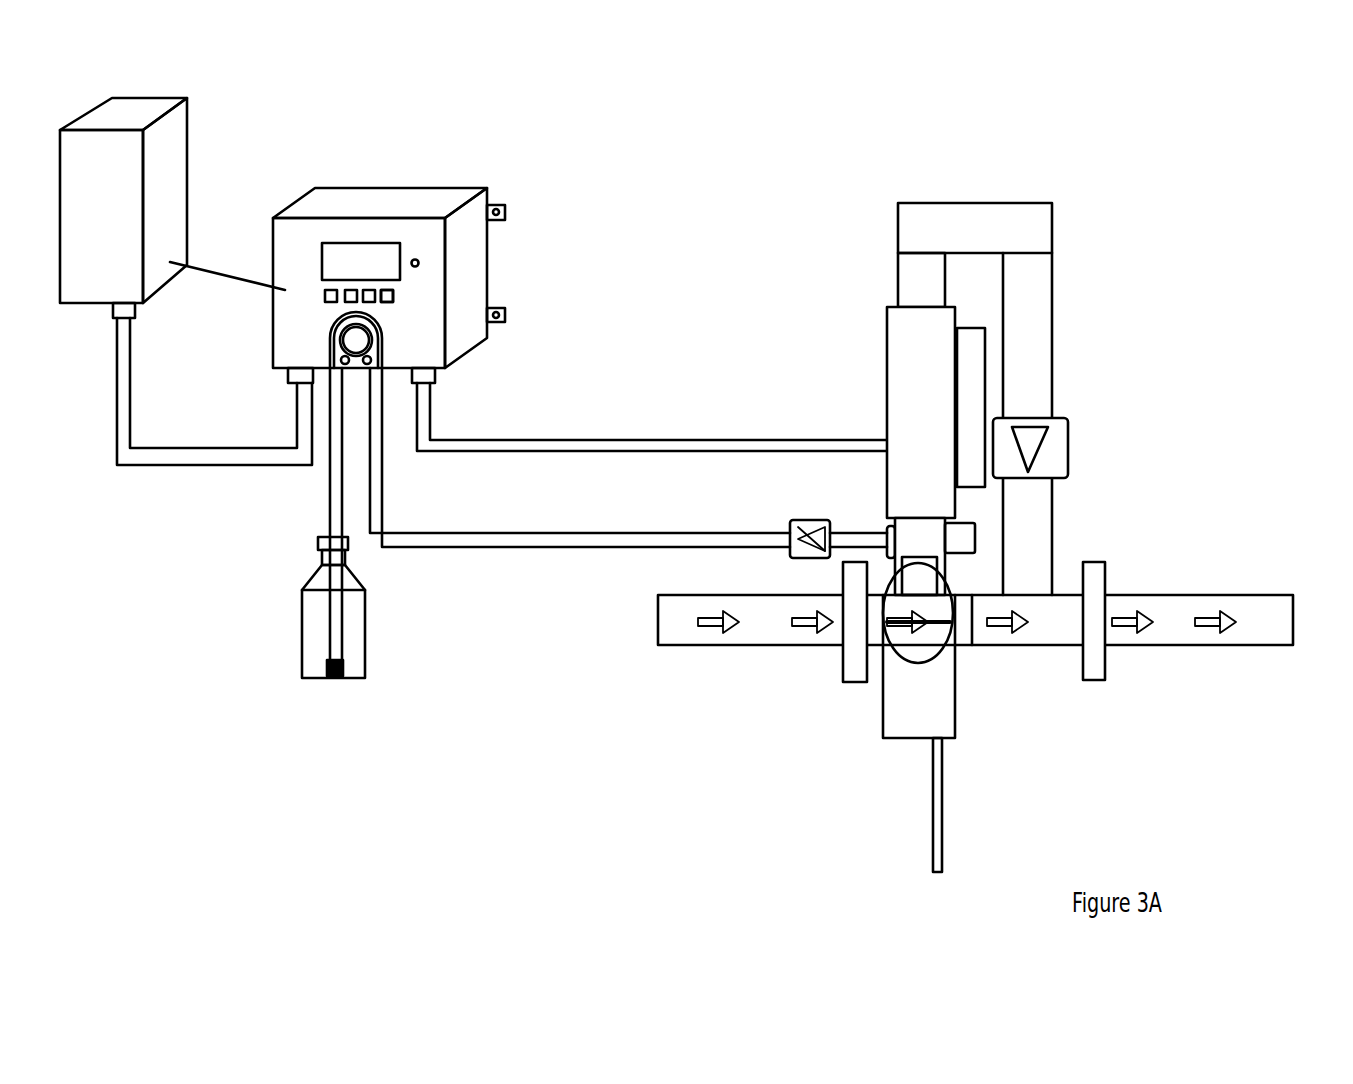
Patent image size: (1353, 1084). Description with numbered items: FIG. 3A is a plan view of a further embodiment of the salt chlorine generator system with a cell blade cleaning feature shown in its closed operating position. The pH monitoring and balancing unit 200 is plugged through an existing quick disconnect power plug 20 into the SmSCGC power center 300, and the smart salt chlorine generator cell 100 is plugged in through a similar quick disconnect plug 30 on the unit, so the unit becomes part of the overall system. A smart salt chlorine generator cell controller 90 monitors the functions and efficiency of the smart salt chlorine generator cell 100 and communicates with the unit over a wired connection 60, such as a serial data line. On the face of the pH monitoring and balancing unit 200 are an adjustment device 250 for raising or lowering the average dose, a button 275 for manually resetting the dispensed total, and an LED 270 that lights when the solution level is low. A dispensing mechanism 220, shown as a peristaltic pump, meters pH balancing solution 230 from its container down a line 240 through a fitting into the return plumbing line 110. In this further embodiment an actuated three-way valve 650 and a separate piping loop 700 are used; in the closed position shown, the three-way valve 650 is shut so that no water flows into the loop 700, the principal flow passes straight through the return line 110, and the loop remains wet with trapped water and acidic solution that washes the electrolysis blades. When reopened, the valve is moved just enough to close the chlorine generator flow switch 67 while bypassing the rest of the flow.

The SmSCGC power center 300 is at (178, 192).
The wired connection 60 is at (227, 263).
The pH monitoring and balancing unit 200 is at (365, 202).
The adjustment device 250 is at (304, 319).
The LED 270 is at (420, 263).
The button 275 is at (392, 302).
The dispensing mechanism 220 is at (356, 365).
The quick disconnect power plug 20 is at (214, 391).
The pH balancing solution 230 is at (312, 652).
The quick disconnect plug 30 is at (652, 417).
The line 240 is at (632, 463).
The piping loop 700 is at (1252, 577).
The smart salt chlorine generator cell 100 is at (880, 387).
The smart salt chlorine generator cell controller 90 is at (972, 400).
The chlorine generator flow switch 67 is at (962, 543).
The return plumbing line 110 is at (673, 647).
The three-way valve 650 is at (960, 708).